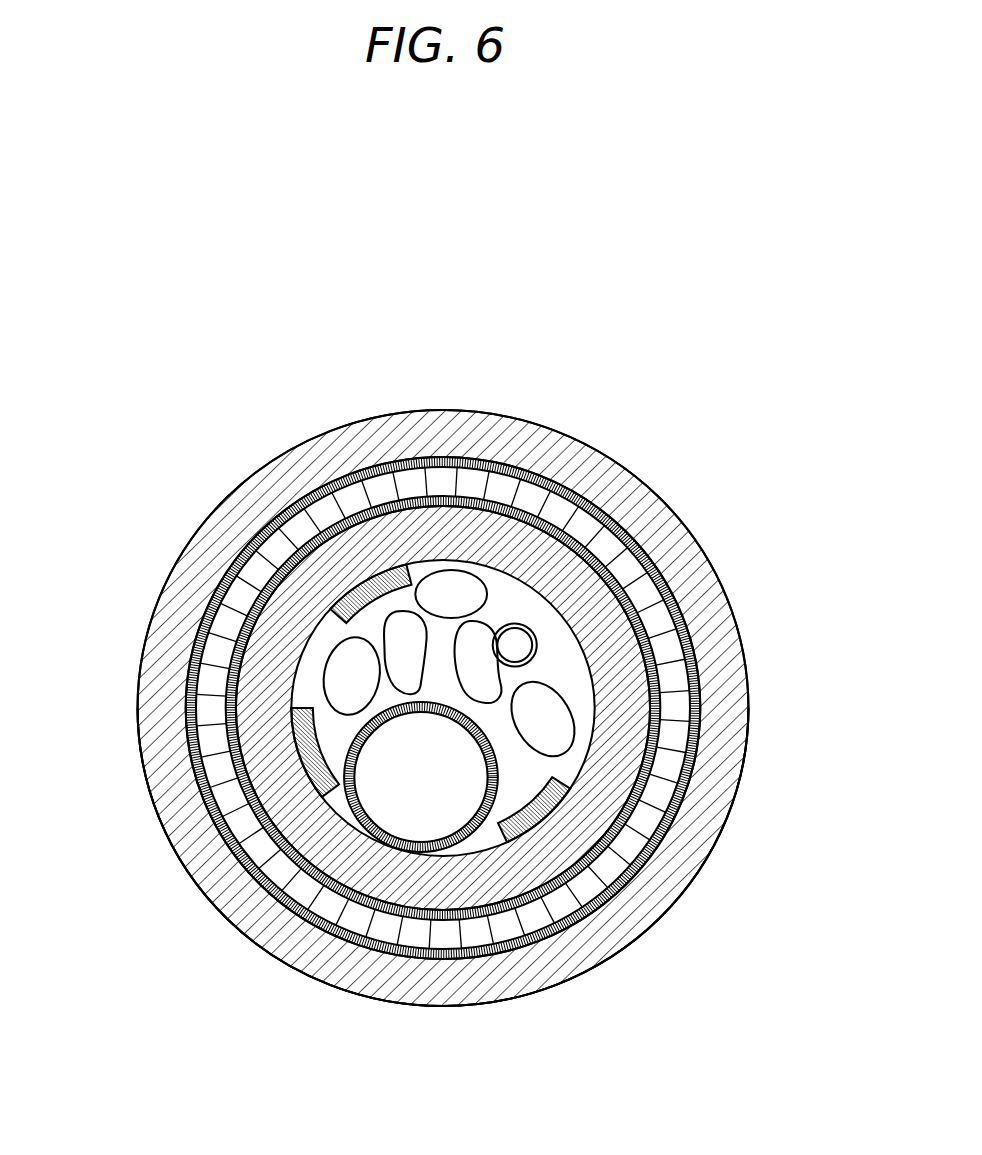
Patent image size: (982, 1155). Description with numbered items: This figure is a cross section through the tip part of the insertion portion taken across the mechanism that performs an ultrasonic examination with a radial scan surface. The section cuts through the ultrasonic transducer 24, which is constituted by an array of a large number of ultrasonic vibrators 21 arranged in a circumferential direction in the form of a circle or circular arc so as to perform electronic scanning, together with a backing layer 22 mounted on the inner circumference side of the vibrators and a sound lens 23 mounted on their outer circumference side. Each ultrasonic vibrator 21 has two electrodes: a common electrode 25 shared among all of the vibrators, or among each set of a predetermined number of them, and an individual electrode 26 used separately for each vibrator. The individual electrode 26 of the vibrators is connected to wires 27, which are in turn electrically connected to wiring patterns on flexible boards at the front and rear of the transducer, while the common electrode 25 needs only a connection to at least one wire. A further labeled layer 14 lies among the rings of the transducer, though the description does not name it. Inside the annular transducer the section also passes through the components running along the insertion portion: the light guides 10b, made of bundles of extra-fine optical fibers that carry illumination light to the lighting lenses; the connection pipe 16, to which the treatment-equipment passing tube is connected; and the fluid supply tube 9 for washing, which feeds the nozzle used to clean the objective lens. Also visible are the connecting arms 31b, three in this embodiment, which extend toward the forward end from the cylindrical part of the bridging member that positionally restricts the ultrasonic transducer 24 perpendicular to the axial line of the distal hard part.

The fluid supply tube 9 is at (535, 640).
The light guide 10b is at (350, 676).
The outer braid layer 14 is at (500, 463).
The connection pipe 16 is at (377, 847).
The ultrasonic vibrators 21 is at (281, 549).
The backing layer 22 is at (428, 532).
The sound lens 23 is at (483, 977).
The ultrasonic transducer 24 is at (663, 441).
The common electrode 25 is at (683, 568).
The individual electrode 26 is at (548, 905).
The wires 27 is at (483, 683).
The connecting arms 31b is at (372, 585).